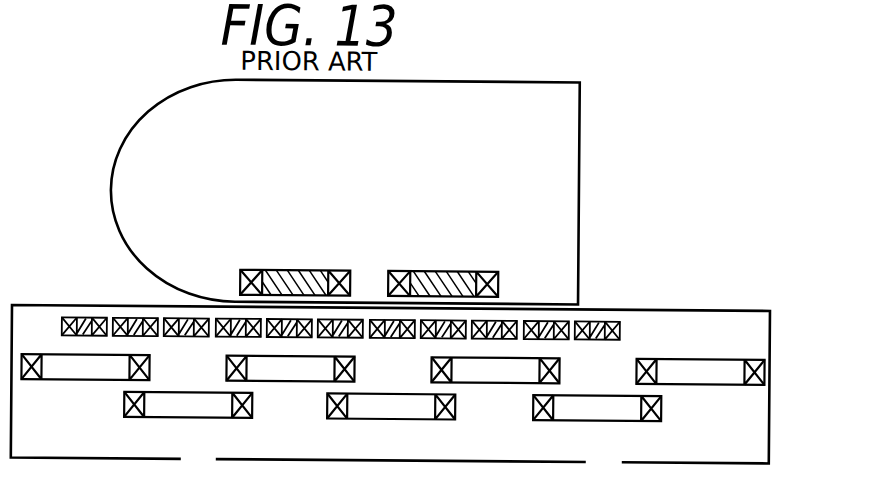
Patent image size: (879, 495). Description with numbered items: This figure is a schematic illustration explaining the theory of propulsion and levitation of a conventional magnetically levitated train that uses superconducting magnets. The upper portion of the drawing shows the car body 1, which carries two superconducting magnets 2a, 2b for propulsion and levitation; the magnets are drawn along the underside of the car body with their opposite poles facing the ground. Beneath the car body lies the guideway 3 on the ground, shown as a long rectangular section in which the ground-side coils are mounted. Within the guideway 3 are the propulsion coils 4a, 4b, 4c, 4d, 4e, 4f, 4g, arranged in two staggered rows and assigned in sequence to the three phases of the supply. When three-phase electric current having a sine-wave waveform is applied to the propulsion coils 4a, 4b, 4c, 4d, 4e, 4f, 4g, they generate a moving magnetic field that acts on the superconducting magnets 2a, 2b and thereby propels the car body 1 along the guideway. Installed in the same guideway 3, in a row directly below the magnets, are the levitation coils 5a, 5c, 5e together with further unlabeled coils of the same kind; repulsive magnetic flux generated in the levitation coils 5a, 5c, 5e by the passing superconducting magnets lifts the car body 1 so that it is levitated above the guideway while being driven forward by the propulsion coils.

The car body 1 is at (578, 152).
The superconducting magnet 2a is at (268, 268).
The superconducting magnet 2b is at (470, 266).
The guideway 3 is at (710, 304).
The propulsion coil 4a is at (55, 380).
The propulsion coil 4b is at (157, 415).
The propulsion coil 4c is at (273, 378).
The propulsion coil 4d is at (365, 415).
The propulsion coil 4e is at (472, 379).
The propulsion coil 4f is at (558, 416).
The propulsion coil 4g is at (683, 382).
The levitation coil 5a is at (82, 316).
The levitation coil 5c is at (126, 316).
The levitation coil 5e is at (173, 316).